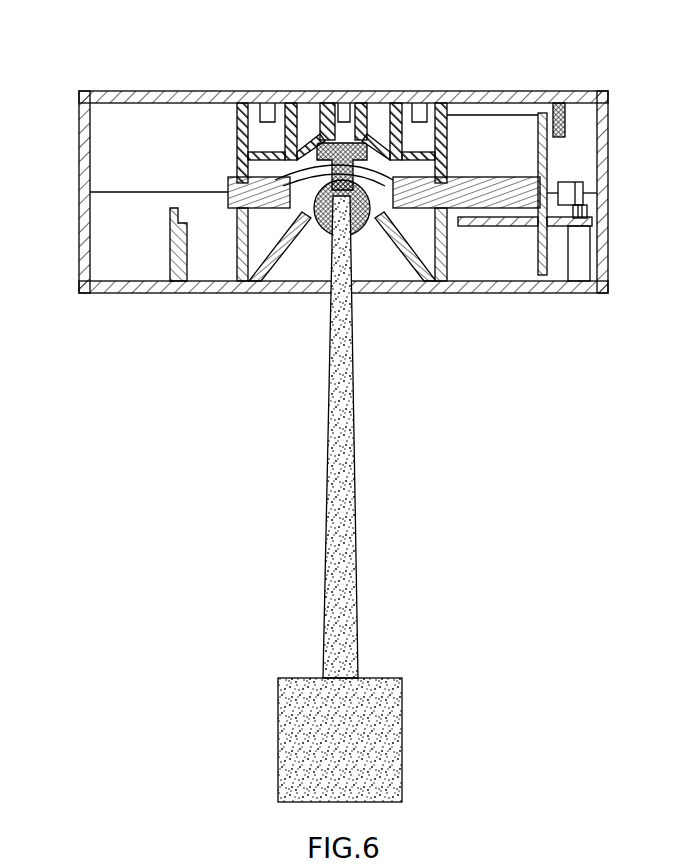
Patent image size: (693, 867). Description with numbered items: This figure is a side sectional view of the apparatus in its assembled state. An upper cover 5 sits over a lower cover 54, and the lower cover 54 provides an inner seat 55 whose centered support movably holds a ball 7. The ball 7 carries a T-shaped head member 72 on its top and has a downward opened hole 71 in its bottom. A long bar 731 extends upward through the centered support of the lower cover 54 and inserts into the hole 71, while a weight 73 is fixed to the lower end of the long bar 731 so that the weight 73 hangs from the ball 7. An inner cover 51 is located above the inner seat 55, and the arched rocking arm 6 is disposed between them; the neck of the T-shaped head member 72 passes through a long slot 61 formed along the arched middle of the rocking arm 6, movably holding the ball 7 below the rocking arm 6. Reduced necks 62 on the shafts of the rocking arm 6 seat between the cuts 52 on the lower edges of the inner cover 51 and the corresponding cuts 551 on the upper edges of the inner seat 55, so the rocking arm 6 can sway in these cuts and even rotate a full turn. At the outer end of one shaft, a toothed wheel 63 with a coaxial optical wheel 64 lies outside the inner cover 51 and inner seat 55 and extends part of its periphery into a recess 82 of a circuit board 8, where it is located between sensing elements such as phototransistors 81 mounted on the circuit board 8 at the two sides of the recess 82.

The upper cover 5 is at (120, 98).
The lower cover 54 is at (148, 292).
The cuts 52 is at (227, 178).
The rocking arm 6 is at (387, 140).
The long slot 61 is at (302, 152).
The inner cover 51 is at (246, 106).
The reduced necks 62 is at (233, 188).
The hole 71 is at (330, 234).
The cuts 551 is at (230, 208).
The inner seat 55 is at (258, 213).
The T-shaped head member 72 is at (347, 141).
The ball 7 is at (352, 234).
The long bar 731 is at (343, 450).
The weight 73 is at (373, 727).
The optical wheel 64 is at (540, 114).
The toothed wheel 63 is at (558, 108).
The phototransistors 81 is at (573, 191).
The recesses 82 is at (553, 228).
The circuit board 8 is at (518, 212).